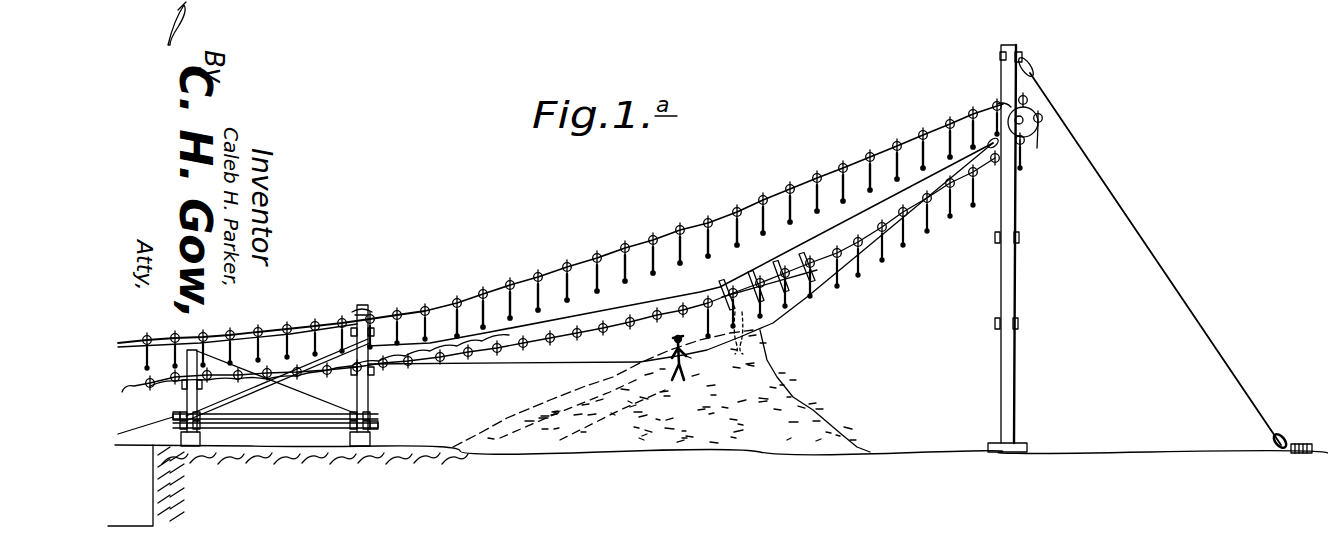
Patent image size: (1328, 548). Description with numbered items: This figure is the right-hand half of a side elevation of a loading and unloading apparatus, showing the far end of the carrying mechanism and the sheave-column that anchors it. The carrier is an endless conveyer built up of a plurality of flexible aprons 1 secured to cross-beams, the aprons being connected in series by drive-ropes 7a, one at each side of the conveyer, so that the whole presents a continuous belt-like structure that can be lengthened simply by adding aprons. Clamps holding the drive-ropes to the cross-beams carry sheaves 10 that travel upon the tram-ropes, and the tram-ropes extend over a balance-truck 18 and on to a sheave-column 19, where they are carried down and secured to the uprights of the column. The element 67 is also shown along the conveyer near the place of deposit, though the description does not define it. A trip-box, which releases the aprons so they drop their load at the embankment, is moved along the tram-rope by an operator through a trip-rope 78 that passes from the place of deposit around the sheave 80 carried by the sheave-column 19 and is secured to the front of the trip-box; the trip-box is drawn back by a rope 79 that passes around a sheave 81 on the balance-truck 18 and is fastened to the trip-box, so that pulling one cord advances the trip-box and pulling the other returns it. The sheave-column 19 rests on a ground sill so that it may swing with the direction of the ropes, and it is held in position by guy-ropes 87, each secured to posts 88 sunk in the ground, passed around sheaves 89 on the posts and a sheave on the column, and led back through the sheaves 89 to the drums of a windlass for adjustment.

The apron 1 is at (622, 326).
The drive-rope 7a is at (692, 226).
The sheave 10 is at (560, 234).
The balance-truck 18 is at (365, 404).
The sheave-column 19 is at (1016, 290).
The carriage rack 67 is at (768, 278).
The trip-rope 78 is at (808, 299).
The return rope 79 is at (537, 365).
The sheave 80 is at (991, 138).
The sheave 81 is at (369, 312).
The guy-rope 87 is at (1200, 332).
The post 88 is at (1300, 437).
The sheave 89 is at (1270, 441).